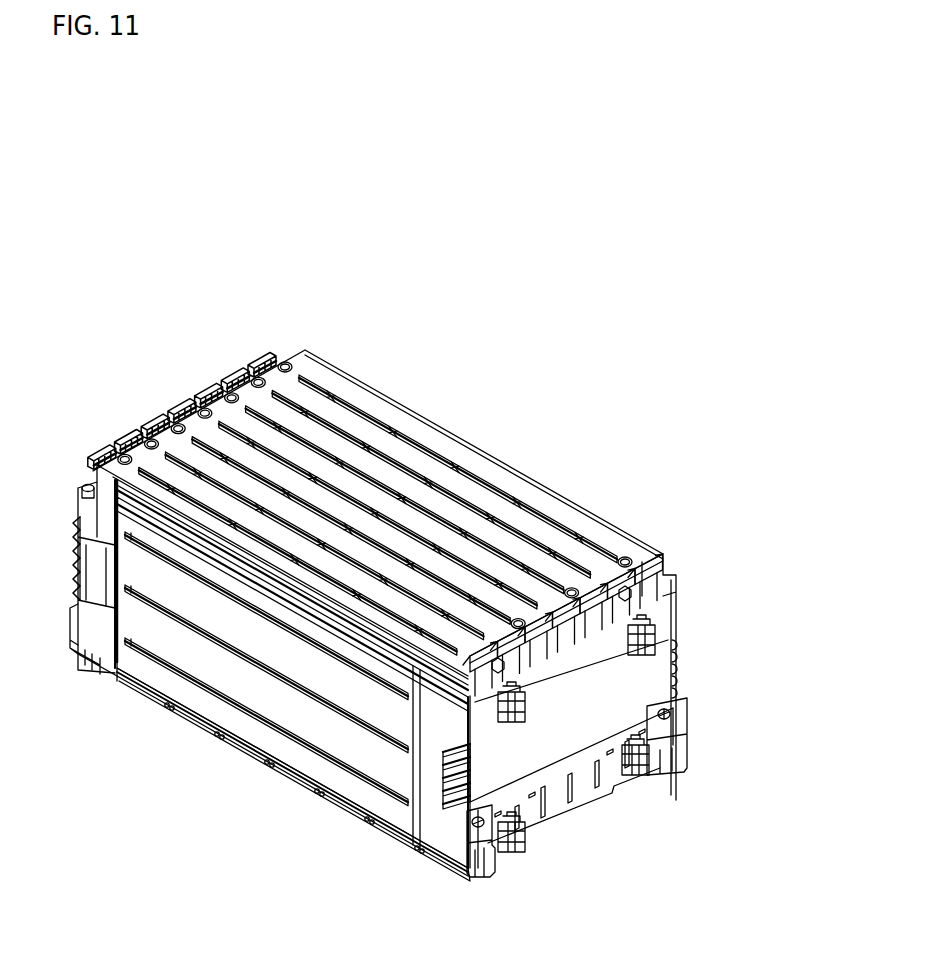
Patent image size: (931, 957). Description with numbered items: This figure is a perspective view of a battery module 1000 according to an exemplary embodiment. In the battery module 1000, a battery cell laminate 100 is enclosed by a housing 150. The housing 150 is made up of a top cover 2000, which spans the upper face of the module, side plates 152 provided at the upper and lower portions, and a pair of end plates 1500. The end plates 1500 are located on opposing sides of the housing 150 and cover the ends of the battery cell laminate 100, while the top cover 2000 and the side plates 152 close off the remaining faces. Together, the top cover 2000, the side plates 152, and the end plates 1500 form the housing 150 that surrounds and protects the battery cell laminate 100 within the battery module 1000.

The battery module 1000 is at (417, 309).
The top cover 2000 is at (413, 520).
The battery cell laminate 100 is at (258, 684).
The housing 150 is at (337, 810).
The end plates 1500 is at (628, 680).
The side plates 152 is at (560, 815).